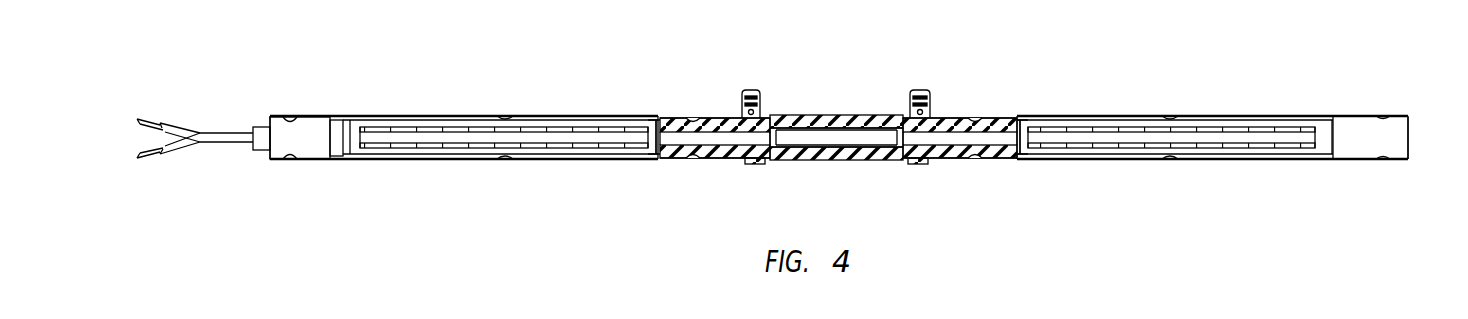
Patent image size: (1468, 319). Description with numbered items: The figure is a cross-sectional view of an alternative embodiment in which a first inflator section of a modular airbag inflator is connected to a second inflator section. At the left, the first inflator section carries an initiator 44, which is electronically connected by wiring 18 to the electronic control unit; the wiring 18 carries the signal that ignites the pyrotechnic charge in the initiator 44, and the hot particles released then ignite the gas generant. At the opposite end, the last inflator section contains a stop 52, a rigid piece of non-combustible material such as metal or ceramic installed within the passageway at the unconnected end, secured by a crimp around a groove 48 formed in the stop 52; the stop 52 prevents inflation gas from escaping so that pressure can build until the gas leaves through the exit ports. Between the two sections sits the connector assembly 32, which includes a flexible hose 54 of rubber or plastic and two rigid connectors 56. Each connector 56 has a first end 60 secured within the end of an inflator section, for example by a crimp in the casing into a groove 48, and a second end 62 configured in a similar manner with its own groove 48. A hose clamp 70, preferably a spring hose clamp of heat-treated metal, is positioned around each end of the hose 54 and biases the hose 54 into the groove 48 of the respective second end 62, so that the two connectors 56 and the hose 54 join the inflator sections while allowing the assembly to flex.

The wiring 18 is at (202, 137).
The initiator 44 is at (278, 145).
The connector assembly 32 is at (903, 64).
The stop 52 is at (1397, 136).
The hose 54 is at (833, 113).
The connector 56 is at (679, 127).
The first end 60 is at (665, 150).
The second end 62 is at (777, 152).
The hose clamp 70 is at (760, 92).
The groove 48 is at (732, 152).